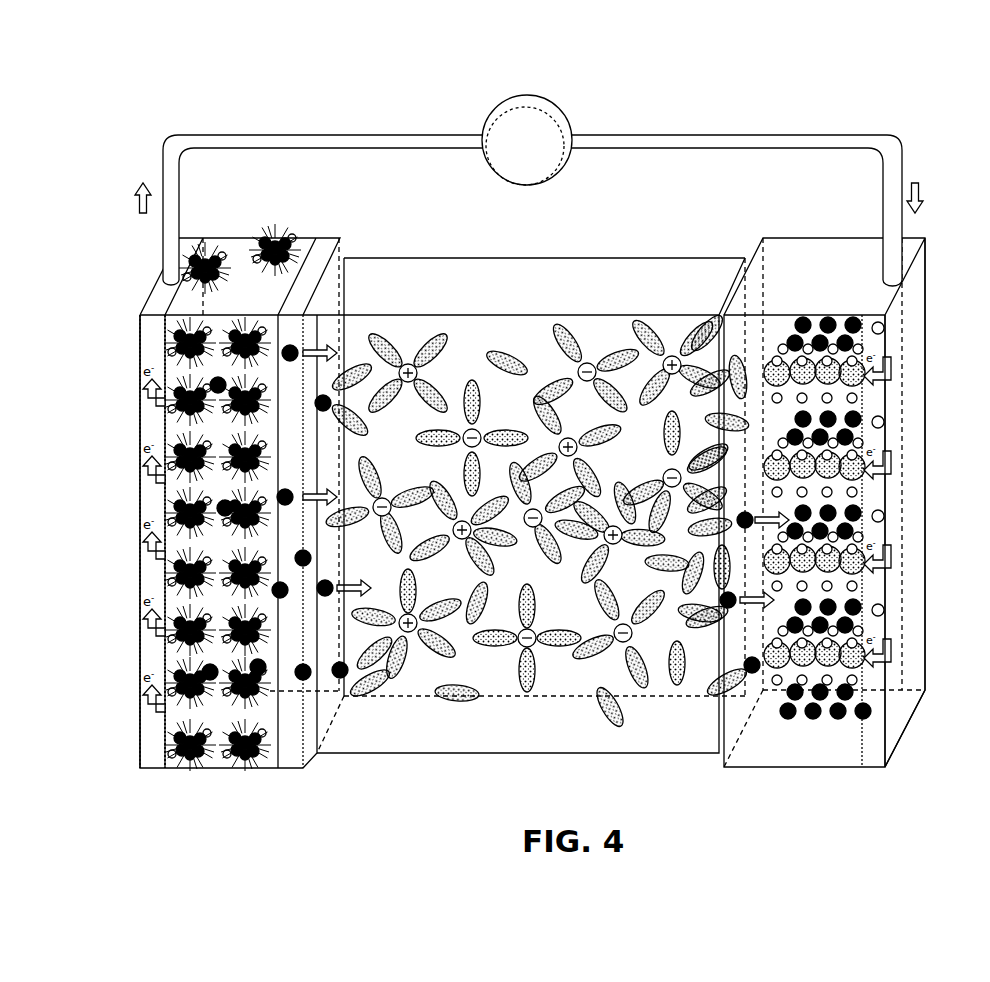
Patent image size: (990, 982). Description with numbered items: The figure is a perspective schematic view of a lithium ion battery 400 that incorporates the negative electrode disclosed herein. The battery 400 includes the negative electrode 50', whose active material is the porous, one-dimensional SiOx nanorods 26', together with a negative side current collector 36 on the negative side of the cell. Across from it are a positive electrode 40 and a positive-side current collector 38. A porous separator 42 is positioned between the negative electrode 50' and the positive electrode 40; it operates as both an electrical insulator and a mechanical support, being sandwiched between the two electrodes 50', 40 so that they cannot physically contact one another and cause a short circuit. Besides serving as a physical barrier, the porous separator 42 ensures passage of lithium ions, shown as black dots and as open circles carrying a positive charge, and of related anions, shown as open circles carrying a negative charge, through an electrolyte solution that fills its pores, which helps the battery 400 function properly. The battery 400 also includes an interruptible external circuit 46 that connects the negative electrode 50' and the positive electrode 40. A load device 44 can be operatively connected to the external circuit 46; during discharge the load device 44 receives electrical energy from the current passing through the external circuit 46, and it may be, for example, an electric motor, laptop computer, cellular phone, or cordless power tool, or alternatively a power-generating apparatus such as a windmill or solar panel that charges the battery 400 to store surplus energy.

The porous, one-dimensional SiOx nanorods 26' is at (186, 497).
The negative side current collector 36 is at (152, 731).
The positive-side current collector 38 is at (880, 750).
The positive electrode 40 is at (849, 467).
The porous separator 42 is at (594, 290).
The load device 44 is at (530, 95).
The interruptible external circuit 46 is at (336, 135).
The negative electrode 50' is at (216, 468).
The lithium ion battery 400 is at (913, 152).